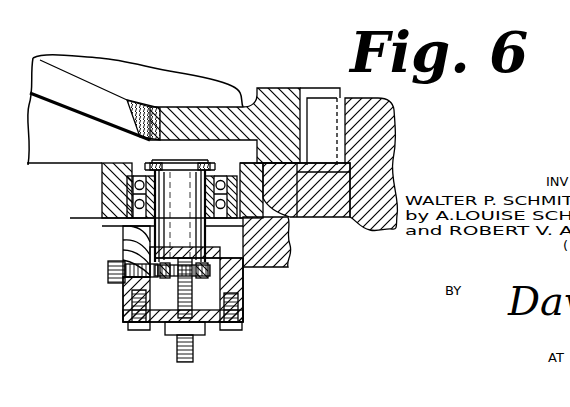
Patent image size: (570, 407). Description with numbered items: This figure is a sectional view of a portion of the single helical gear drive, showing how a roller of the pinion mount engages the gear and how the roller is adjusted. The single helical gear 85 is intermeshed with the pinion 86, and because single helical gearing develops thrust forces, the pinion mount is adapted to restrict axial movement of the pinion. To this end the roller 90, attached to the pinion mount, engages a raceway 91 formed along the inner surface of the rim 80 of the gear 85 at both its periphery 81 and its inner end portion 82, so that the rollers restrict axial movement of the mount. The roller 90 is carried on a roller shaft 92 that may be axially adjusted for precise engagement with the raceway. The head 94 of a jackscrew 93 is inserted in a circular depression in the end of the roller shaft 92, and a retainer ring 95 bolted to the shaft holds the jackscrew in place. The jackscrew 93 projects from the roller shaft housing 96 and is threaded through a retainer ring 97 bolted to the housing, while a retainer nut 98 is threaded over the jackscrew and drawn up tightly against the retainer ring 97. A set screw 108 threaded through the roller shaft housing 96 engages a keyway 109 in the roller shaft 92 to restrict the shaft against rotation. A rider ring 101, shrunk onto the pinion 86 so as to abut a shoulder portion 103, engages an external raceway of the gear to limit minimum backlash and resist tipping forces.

The rim 80 is at (273, 255).
The periphery 81 is at (297, 228).
The inner end portion 82 is at (252, 162).
The single helical gear 85 is at (285, 87).
The pinion 86 is at (389, 118).
The roller 90 is at (110, 165).
The raceway 91 is at (300, 156).
The roller shaft 92 is at (180, 211).
The jackscrew 93 is at (193, 354).
The head 94 is at (180, 288).
The retainer ring 95 is at (240, 300).
The roller shaft housing 96 is at (245, 316).
The retainer ring 97 is at (130, 319).
The retainer nut 98 is at (165, 334).
The rider ring 101 is at (335, 220).
The shoulder portion 103 is at (342, 172).
The set screw 108 is at (123, 247).
The keyway 109 is at (130, 230).